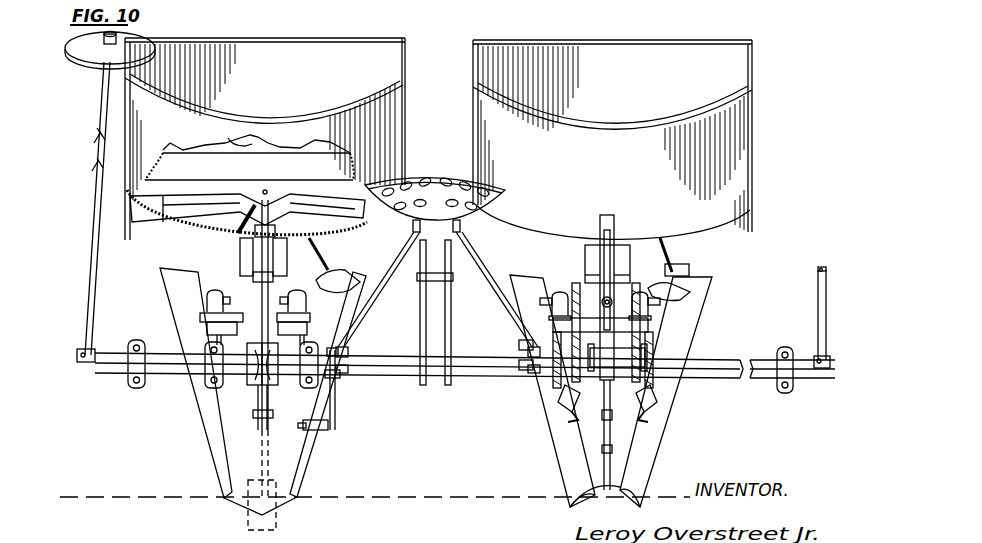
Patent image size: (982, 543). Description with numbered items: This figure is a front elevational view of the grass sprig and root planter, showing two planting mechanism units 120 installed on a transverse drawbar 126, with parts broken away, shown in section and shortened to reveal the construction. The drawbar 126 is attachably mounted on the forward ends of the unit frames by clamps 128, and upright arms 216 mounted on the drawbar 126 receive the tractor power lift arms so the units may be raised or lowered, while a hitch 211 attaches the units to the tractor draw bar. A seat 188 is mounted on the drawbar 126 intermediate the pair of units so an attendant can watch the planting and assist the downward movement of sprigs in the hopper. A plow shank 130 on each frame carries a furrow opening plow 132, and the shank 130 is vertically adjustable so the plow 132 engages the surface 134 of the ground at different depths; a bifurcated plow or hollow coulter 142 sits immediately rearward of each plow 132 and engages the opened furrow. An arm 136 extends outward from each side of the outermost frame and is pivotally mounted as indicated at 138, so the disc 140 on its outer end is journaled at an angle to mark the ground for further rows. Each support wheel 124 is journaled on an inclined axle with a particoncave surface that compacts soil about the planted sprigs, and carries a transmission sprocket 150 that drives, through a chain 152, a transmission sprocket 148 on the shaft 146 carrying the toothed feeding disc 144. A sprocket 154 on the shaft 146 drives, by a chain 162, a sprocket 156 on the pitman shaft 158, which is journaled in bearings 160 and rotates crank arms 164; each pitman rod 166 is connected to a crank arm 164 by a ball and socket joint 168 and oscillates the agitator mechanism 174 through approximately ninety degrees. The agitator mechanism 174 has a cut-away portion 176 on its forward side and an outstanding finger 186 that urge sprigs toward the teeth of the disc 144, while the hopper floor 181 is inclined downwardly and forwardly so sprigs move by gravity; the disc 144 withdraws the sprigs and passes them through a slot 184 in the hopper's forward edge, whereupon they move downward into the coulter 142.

The planting mechanism 120 is at (418, 24).
The support wheel 124 is at (215, 447).
The transverse drawbar 126 is at (715, 363).
The clamp 128 is at (205, 372).
The plow shank 130 is at (258, 398).
The furrow opening plow 132 is at (248, 519).
The surface of the ground 134 is at (340, 497).
The arm 136 is at (88, 258).
The pivotal mounting 138 is at (80, 349).
The disc 140 is at (88, 60).
The bifurcated plow or hollow coulter 142 is at (280, 510).
The toothed feeding disc 144 is at (260, 300).
The shaft 146 is at (648, 410).
The transmission sprocket 148 is at (560, 385).
The transmission sprocket 150 is at (578, 425).
The chain 152 is at (568, 405).
The sprocket 154 is at (575, 415).
The sprocket 156 is at (580, 285).
The pitman shaft 158 is at (292, 314).
The bearing 160 is at (207, 298).
The chain 162 is at (580, 284).
The crank arm 164 is at (330, 285).
The pitman rod 166 is at (320, 255).
The ball and socket joint 168 is at (689, 270).
The agitator mechanism 174 is at (290, 190).
The cut-away portion 176 is at (318, 210).
The hopper floor 181 is at (256, 140).
The slot 184 is at (600, 232).
The outstanding finger 186 is at (236, 232).
The seat 188 is at (466, 210).
The hitch 211 is at (337, 400).
The upright arm 216 is at (420, 323).